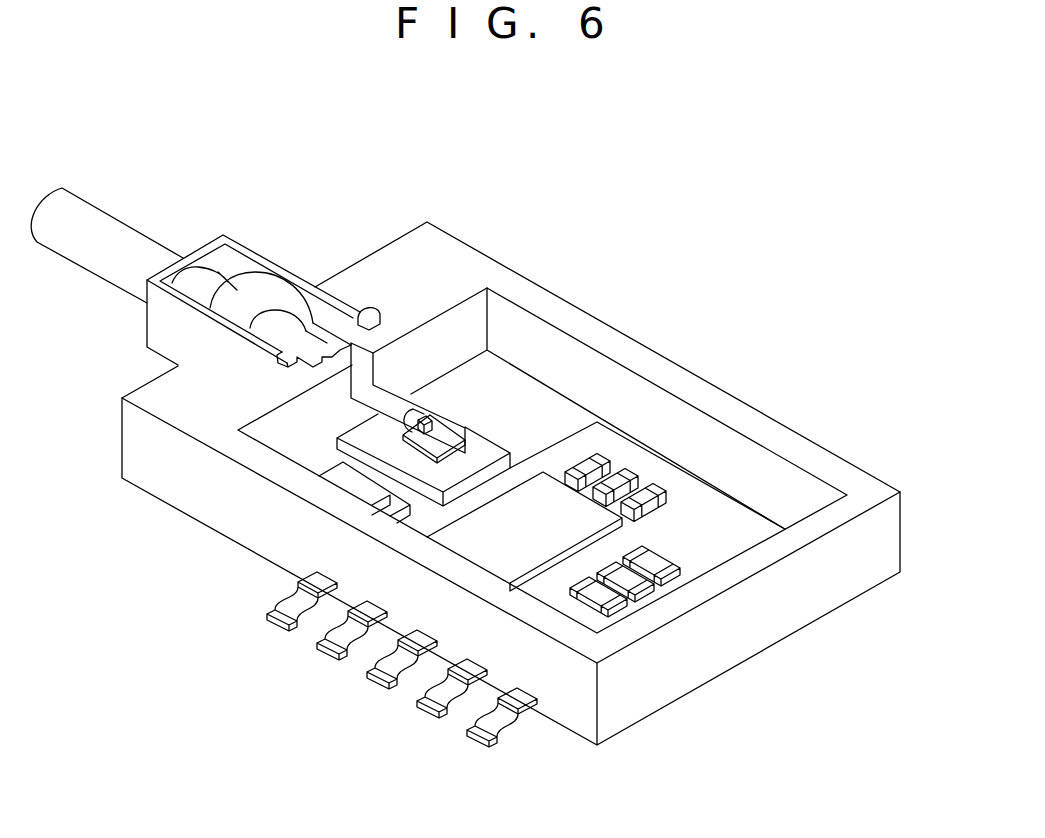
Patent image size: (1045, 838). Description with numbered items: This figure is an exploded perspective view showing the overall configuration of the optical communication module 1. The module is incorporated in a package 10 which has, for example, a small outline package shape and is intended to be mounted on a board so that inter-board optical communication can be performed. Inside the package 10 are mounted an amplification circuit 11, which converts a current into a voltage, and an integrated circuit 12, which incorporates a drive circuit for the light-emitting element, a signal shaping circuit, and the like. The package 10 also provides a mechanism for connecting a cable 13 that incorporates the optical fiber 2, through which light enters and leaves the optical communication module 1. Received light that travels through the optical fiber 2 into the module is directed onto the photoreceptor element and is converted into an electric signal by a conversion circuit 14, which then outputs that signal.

The optical communication module 1 is at (563, 293).
The optical fiber 2 is at (385, 400).
The package 10 is at (697, 373).
The amplification circuit 11 is at (352, 482).
The integrated circuit 12 is at (593, 521).
The cable 13 is at (114, 217).
The conversion circuit 14 is at (387, 442).